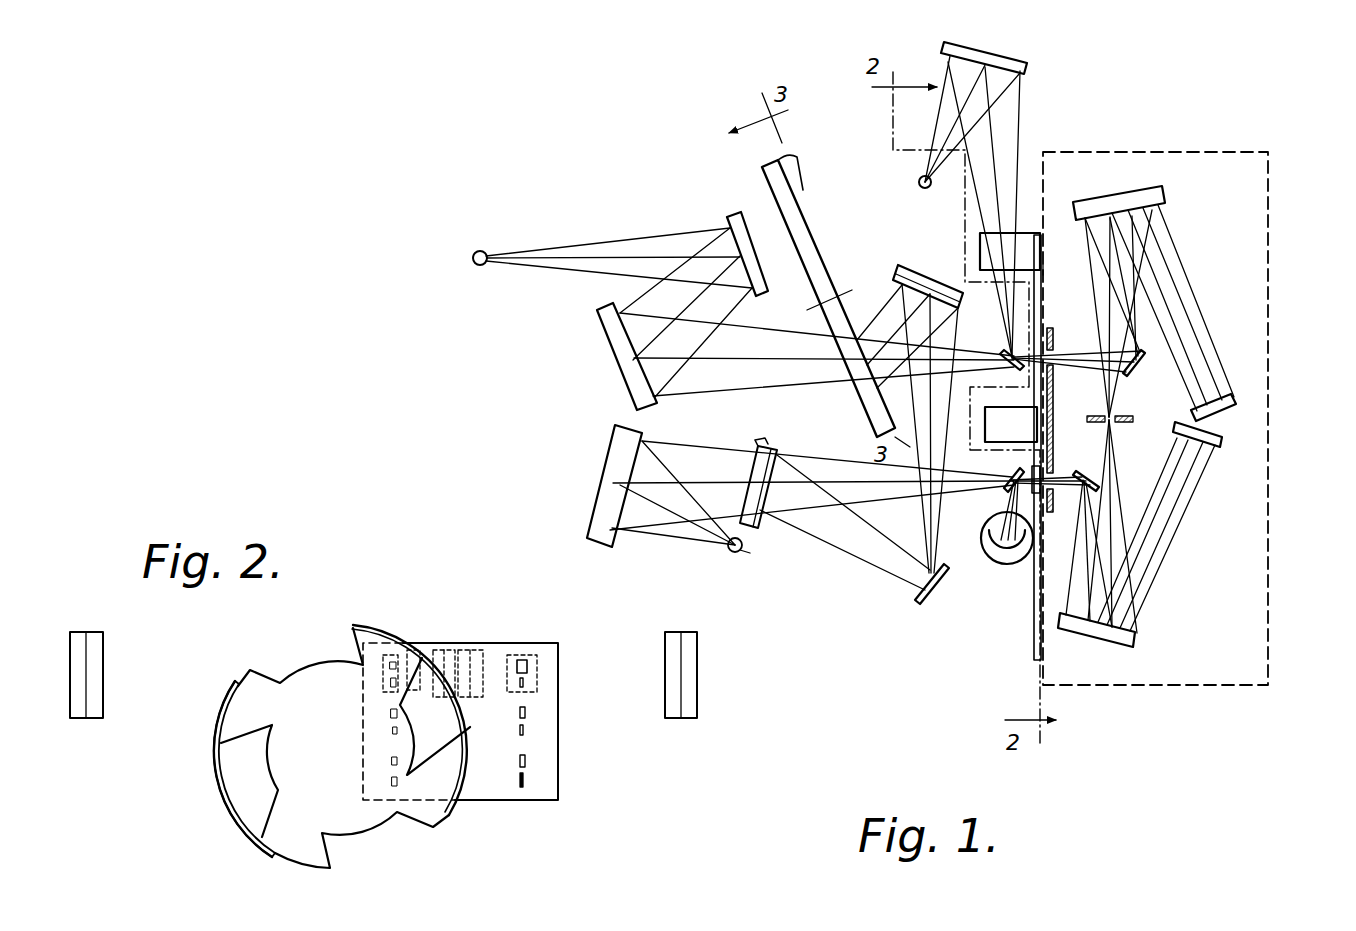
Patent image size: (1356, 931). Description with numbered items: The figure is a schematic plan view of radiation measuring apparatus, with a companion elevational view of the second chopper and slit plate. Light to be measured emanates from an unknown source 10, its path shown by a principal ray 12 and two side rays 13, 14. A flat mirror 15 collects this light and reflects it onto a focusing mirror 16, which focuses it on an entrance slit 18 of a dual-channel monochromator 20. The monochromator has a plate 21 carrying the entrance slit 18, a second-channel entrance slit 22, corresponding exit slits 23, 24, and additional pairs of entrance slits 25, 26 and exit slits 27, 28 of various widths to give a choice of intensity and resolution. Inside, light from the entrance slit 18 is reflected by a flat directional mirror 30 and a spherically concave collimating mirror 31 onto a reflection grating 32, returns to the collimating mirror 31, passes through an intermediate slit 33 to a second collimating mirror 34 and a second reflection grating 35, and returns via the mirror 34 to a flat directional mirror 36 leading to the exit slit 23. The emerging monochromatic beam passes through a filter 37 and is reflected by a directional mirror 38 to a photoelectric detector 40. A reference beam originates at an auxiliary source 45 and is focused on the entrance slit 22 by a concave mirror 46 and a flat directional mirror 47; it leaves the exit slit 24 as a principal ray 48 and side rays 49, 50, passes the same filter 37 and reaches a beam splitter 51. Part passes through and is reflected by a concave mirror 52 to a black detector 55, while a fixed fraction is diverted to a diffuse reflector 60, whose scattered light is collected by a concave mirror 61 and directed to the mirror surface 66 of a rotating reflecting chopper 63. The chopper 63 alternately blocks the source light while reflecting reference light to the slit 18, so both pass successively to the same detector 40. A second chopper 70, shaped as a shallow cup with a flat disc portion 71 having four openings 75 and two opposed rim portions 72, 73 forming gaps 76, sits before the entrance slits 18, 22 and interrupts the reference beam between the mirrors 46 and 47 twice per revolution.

In FIG. 1, the unknown source 10 is at (478, 254).
In FIG. 1, the principal ray 12 is at (544, 251).
In FIG. 1, the side ray 13 is at (610, 253).
In FIG. 1, the side ray 14 is at (540, 262).
In FIG. 1, the flat mirror 15 is at (729, 217).
In FIG. 1, the focusing mirror 16 is at (602, 334).
In FIG. 1, the entrance slit 18 is at (1052, 352).
In FIG. 2, the entrance slit 18 is at (385, 658).
In FIG. 1, the dual-channel monochromator 20 is at (1268, 575).
In FIG. 2, the dual-channel monochromator 20 is at (576, 654).
In FIG. 1, the plate 21 is at (1044, 306).
In FIG. 2, the plate 21 is at (560, 802).
In FIG. 2, the entrance slit 22 is at (392, 684).
In FIG. 2, the exit slit 23 is at (523, 658).
In FIG. 2, the exit slit 24 is at (526, 682).
In FIG. 2, the entrance slits 25 is at (391, 713).
In FIG. 2, the entrance slits 26 is at (392, 762).
In FIG. 2, the exit slits 27 is at (526, 708).
In FIG. 2, the exit slits 28 is at (528, 760).
In FIG. 1, the flat directional mirror 30 is at (1138, 374).
In FIG. 2, the flat directional mirror 30 is at (410, 648).
In FIG. 1, the spherically concave collimating mirror 31 is at (1120, 194).
In FIG. 2, the spherically concave collimating mirror 31 is at (86, 632).
In FIG. 1, the reflection grating 32 is at (1236, 396).
In FIG. 2, the reflection grating 32 is at (440, 648).
In FIG. 1, the intermediate slit 33 is at (1112, 426).
In FIG. 1, the second spherically concave collimating mirror 34 is at (1135, 640).
In FIG. 2, the second spherically concave collimating mirror 34 is at (690, 722).
In FIG. 1, the second reflection grating 35 is at (1222, 442).
In FIG. 2, the second reflection grating 35 is at (474, 648).
In FIG. 1, the flat directional mirror 36 is at (1086, 470).
In FIG. 2, the flat directional mirror 36 is at (517, 655).
In FIG. 1, the filter 37 is at (1010, 475).
In FIG. 1, the directional mirror 38 is at (1008, 494).
In FIG. 1, the photoelectric detector 40 is at (1000, 563).
In FIG. 1, the auxiliary source 45 is at (910, 182).
In FIG. 1, the concave mirror 46 is at (994, 64).
In FIG. 1, the flat directional mirror 47 is at (996, 352).
In FIG. 1, the principal ray 48 is at (802, 468).
In FIG. 1, the side ray 49 is at (844, 462).
In FIG. 1, the side ray 50 is at (872, 506).
In FIG. 1, the beam splitter 51 is at (760, 442).
In FIG. 1, the concave mirror 52 is at (592, 510).
In FIG. 1, the black detector 55 is at (734, 552).
In FIG. 1, the diffuse reflector 60 is at (929, 605).
In FIG. 1, the concave mirror 61 is at (900, 269).
In FIG. 1, the reflecting chopper 63 is at (826, 238).
In FIG. 1, the mirror surface 66 is at (790, 156).
In FIG. 1, the second chopper 70 is at (966, 238).
In FIG. 2, the second chopper 70 is at (330, 759).
In FIG. 1, the flat disc portion 71 is at (1043, 274).
In FIG. 2, the flat disc portion 71 is at (428, 812).
In FIG. 1, the rim portion 72 is at (981, 238).
In FIG. 2, the rim portion 72 is at (460, 776).
In FIG. 1, the rim portion 73 is at (994, 410).
In FIG. 2, the rim portion 73 is at (268, 851).
In FIG. 2, the openings 75 is at (252, 668).
In FIG. 2, the gaps 76 is at (235, 682).